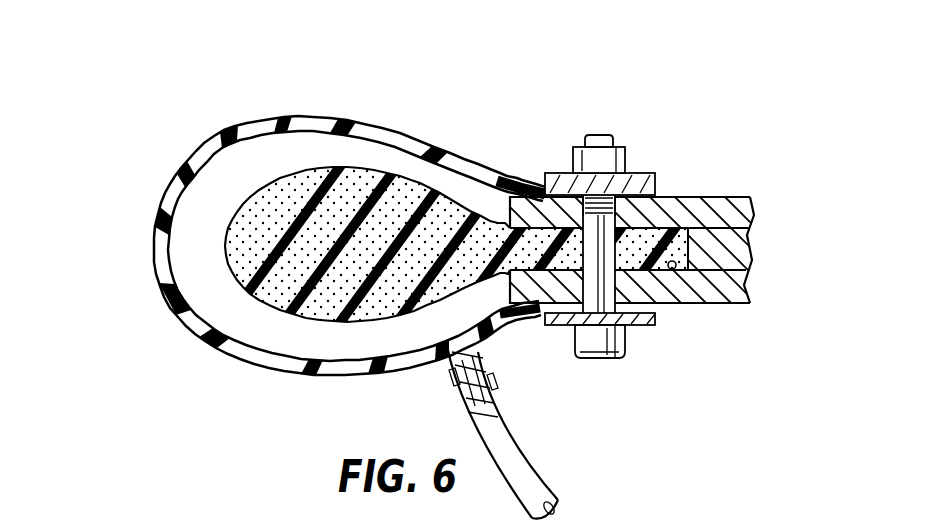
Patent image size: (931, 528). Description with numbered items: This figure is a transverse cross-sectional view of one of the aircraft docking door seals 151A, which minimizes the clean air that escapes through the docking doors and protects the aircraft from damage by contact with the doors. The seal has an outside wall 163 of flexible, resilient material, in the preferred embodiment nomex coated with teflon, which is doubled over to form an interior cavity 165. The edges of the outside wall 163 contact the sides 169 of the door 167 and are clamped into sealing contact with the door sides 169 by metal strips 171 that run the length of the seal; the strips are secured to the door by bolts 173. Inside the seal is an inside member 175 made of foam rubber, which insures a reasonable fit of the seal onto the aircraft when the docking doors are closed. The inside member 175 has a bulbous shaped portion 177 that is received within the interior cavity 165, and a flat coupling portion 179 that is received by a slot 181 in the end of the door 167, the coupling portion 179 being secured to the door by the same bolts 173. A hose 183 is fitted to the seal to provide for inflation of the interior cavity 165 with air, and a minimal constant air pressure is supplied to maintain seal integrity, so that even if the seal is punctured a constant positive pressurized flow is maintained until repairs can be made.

The seal 151A is at (173, 183).
The outside wall 163 is at (290, 126).
The interior cavity 165 is at (217, 313).
The door 167 is at (743, 223).
The door sides 169 is at (703, 197).
The metal strips 171 is at (632, 166).
The bolts 173 is at (627, 338).
The inside member 175 is at (380, 182).
The bulbous shaped portion 177 is at (347, 316).
The flat coupling portion 179 is at (740, 237).
The slot 181 is at (677, 273).
The hose 183 is at (527, 465).